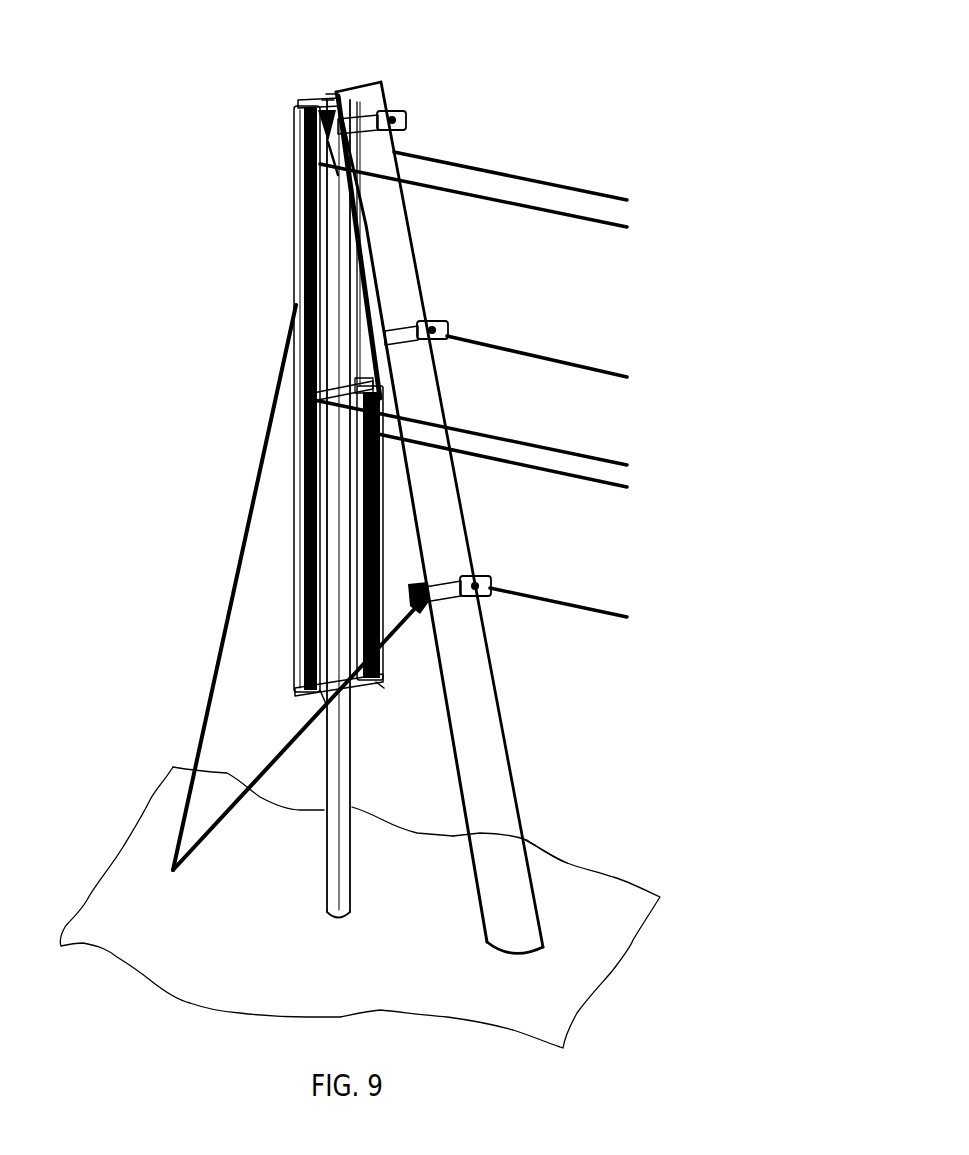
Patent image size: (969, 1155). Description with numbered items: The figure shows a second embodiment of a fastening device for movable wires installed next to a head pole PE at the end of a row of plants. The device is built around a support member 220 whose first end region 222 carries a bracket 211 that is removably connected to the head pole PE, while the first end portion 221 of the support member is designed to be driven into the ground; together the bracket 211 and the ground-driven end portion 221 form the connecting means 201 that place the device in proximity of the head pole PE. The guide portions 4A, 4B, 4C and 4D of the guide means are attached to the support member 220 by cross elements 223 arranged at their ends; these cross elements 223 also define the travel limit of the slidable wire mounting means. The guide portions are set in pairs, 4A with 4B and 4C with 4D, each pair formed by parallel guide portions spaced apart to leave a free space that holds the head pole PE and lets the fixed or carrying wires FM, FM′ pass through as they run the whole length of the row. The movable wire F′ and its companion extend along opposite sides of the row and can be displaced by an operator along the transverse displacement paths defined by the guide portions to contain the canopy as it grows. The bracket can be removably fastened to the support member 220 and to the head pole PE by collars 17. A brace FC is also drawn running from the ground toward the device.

The connecting means 201 is at (268, 272).
The bracket 211 is at (324, 100).
The support member 220 is at (351, 791).
The first end portion 221 is at (368, 894).
The first end region 222 is at (326, 91).
The cross elements 223 is at (314, 102).
The collars 17 is at (410, 122).
The guide portion 4A is at (295, 205).
The guide portion 4B is at (384, 520).
The guide portion 4C is at (320, 700).
The guide portion 4D is at (382, 690).
The head pole PE is at (374, 106).
The guy cable FC is at (262, 446).
The fixed or carrying wire FM is at (562, 362).
The movable wire F′ is at (540, 462).
The fixed or carrying wire FM′ is at (560, 600).